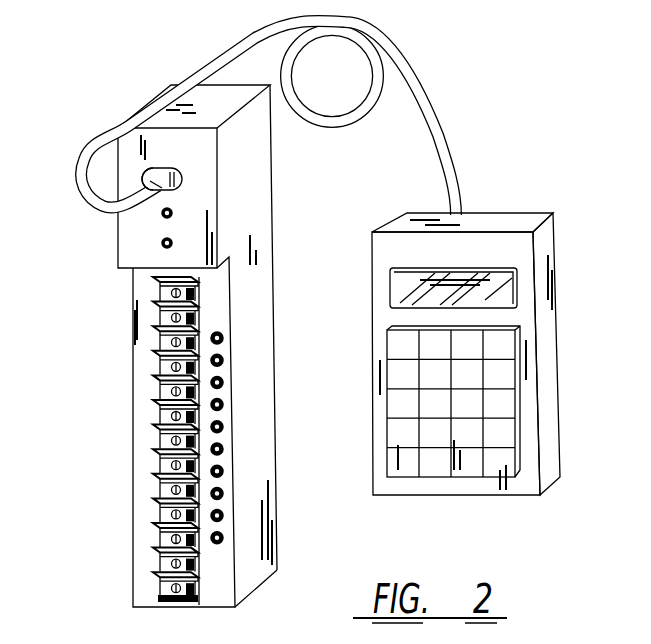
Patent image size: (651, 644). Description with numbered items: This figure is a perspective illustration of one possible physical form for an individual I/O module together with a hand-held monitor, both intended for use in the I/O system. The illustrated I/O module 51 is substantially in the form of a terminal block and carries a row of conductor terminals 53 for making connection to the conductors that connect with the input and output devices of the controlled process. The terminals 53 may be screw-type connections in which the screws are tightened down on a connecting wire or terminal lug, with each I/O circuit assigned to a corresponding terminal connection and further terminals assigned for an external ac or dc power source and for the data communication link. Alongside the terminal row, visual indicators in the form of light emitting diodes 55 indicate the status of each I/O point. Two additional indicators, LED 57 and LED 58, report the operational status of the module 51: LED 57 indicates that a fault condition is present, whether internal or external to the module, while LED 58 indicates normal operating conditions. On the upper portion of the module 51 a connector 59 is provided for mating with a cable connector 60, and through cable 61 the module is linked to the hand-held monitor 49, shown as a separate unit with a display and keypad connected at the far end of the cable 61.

The hand-held monitor 49 is at (532, 213).
The I/O module 51 is at (279, 503).
The conductor terminals 53 is at (164, 383).
The light emitting diodes 55 is at (224, 379).
The LED 57 is at (160, 214).
The LED 58 is at (160, 241).
The connector 59 is at (178, 168).
The cable connector 60 is at (143, 172).
The cable 61 is at (197, 63).